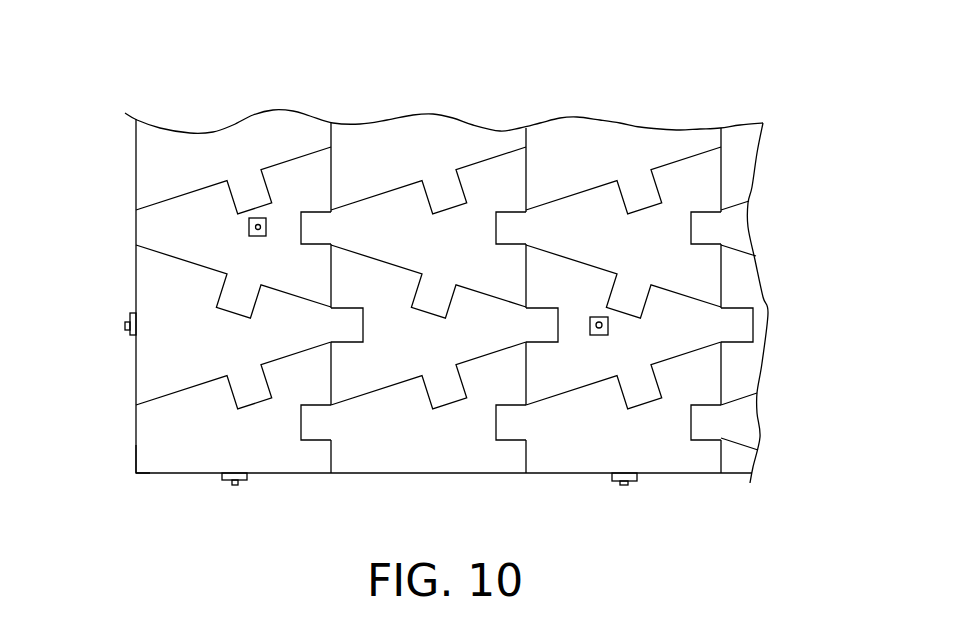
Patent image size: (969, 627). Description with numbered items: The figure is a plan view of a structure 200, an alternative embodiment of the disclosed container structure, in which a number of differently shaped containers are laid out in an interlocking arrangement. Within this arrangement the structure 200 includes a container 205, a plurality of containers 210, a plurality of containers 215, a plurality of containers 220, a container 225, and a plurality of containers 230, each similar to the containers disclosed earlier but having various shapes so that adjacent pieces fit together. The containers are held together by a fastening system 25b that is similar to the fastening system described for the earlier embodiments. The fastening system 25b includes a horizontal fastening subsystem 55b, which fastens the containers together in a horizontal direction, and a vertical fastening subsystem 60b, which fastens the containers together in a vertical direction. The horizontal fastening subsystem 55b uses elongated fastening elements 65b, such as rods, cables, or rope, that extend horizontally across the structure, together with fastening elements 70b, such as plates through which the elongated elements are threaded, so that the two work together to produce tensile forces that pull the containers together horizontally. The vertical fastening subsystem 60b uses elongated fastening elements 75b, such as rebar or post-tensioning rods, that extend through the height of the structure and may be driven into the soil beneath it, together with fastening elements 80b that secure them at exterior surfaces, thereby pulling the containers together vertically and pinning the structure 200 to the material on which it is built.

The structure 200 is at (540, 66).
The container 205 is at (188, 450).
The containers 210 is at (440, 452).
The containers 215 is at (158, 154).
The containers 220 is at (412, 142).
The container 225 is at (155, 232).
The containers 230 is at (403, 232).
The fastening system 25b is at (91, 481).
The horizontal fastening subsystem 55b is at (134, 492).
The vertical fastening subsystem 60b is at (118, 251).
The fastening elements 65b is at (125, 326).
The fastening elements 70b is at (135, 336).
The fastening elements 75b is at (258, 217).
The fastening elements 80b is at (249, 233).